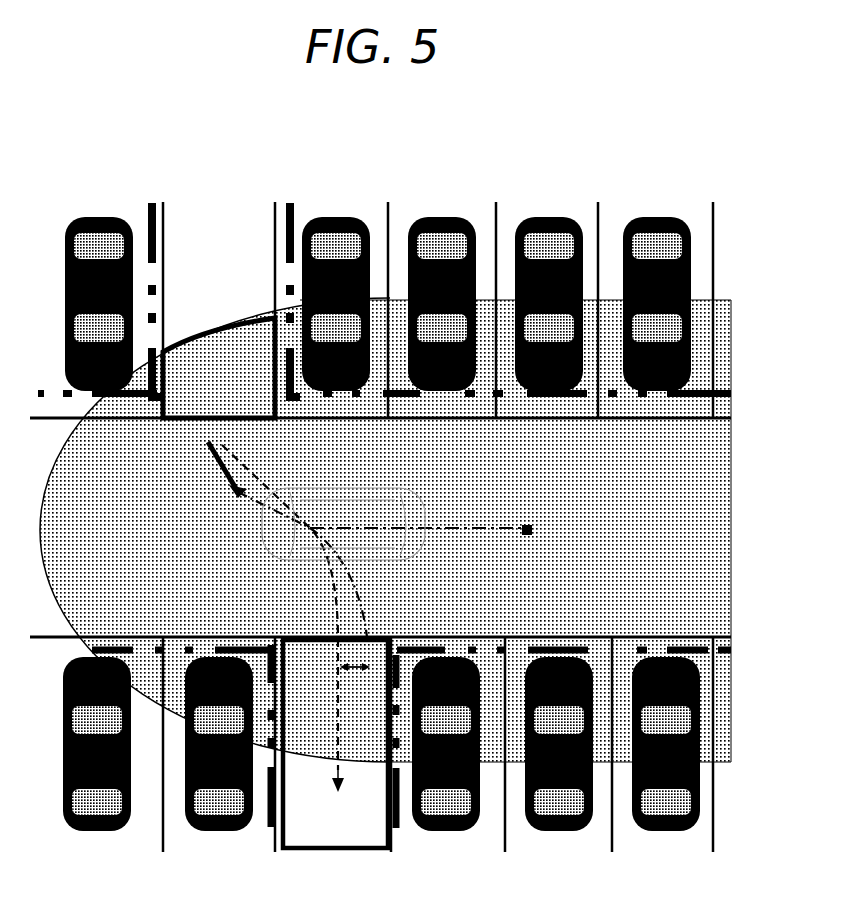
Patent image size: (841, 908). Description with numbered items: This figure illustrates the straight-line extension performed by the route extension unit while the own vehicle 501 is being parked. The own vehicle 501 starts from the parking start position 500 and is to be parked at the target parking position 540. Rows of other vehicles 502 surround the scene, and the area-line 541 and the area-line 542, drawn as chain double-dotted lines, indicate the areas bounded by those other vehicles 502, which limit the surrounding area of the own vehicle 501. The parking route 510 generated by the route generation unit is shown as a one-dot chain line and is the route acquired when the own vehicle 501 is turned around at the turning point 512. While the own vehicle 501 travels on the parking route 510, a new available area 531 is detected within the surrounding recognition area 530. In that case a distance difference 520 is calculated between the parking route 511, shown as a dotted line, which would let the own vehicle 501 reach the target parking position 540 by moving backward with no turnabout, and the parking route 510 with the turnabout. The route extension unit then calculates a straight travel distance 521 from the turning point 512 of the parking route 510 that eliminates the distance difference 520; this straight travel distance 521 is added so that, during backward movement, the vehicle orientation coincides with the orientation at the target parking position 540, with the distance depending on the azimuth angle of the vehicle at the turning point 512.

The parking start position 500 is at (529, 526).
The own vehicle 501 is at (366, 484).
The other vehicles 502 is at (98, 217).
The parking route 510 is at (441, 528).
The parking route 511 is at (257, 468).
The turning point 512 is at (238, 496).
The distance difference 520 is at (368, 663).
The straight travel distance 521 is at (220, 460).
The surrounding recognition area 530 is at (43, 543).
The available area 531 is at (207, 384).
The target parking position 540 is at (302, 843).
The area-line 541 is at (622, 398).
The area-line 542 is at (597, 647).